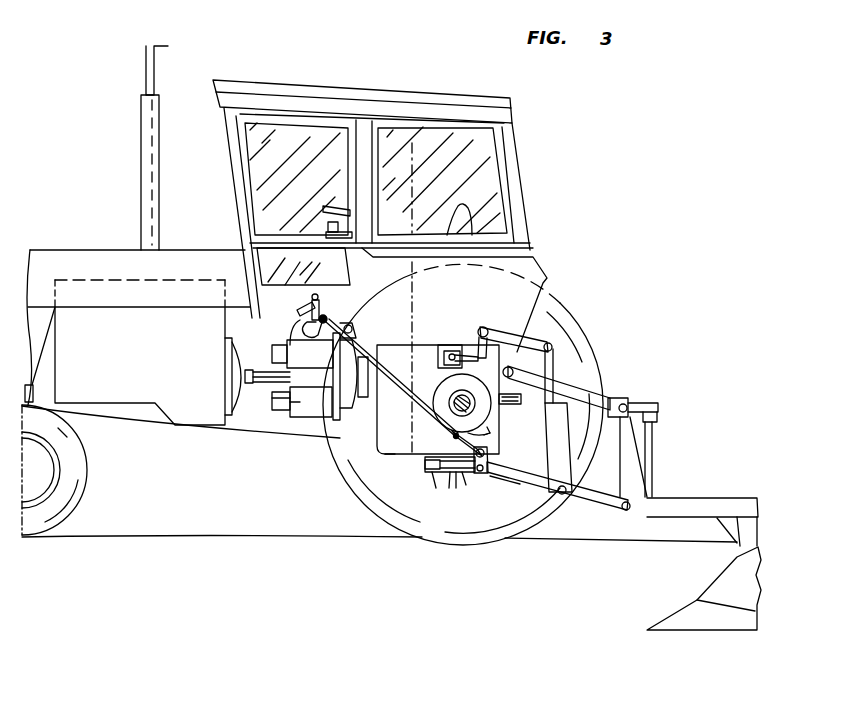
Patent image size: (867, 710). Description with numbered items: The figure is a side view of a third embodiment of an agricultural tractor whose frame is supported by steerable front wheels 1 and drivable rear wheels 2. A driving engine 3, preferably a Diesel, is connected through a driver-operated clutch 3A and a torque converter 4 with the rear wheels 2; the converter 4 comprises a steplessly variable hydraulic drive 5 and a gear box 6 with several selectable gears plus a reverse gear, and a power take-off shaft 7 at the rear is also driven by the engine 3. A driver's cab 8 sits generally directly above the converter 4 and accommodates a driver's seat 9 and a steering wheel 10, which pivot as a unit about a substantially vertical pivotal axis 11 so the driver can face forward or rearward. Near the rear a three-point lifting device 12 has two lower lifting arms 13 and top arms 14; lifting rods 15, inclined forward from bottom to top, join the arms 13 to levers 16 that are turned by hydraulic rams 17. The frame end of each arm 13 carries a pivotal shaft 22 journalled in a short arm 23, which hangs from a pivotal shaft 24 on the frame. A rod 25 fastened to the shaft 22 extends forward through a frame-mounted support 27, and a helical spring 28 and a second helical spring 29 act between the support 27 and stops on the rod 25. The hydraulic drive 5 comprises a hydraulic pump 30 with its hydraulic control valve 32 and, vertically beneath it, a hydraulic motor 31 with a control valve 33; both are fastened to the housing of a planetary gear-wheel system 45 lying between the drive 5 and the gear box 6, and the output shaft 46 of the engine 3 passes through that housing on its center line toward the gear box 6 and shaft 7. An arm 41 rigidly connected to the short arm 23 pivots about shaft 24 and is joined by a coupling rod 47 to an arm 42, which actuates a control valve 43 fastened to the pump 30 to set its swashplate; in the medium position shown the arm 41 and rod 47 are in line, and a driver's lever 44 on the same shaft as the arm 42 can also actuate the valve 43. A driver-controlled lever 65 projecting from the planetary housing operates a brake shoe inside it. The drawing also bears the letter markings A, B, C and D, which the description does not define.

The front wheels 1 is at (78, 492).
The rear wheels 2 is at (422, 545).
The driving engine 3 is at (135, 405).
The driver-operated clutch 3A is at (228, 403).
The torque converter 4 is at (305, 416).
The steplessly variable hydraulic drive 5 is at (272, 413).
The gear box 6 is at (392, 456).
The power take-off shaft 7 is at (513, 399).
The driver's cab 8 is at (512, 150).
The driver's seat 9 is at (470, 216).
The steering wheel 10 is at (331, 204).
The vertical pivotal axis 11 is at (420, 186).
The three-point lifting device 12 is at (578, 388).
The lower lifting arms 13 is at (594, 505).
The top arms 14 is at (603, 372).
The lifting rods 15 is at (560, 443).
The levers 16 is at (500, 328).
The hydraulic rams 17 is at (458, 345).
The pivotal shaft 22 is at (488, 480).
The short arm 23 is at (506, 485).
The pivotal shaft 24 is at (489, 454).
The rod 25 is at (432, 476).
The support 27 is at (452, 490).
The helical spring 28 is at (466, 486).
The helical spring 29 is at (436, 490).
The hydraulic pump 30 is at (288, 344).
The hydraulic motor 31 is at (300, 417).
The hydraulic control valve 32 is at (272, 353).
The control valve 33 is at (274, 410).
The arm 41 is at (503, 426).
The arm 42 is at (352, 316).
The control valve 43 is at (300, 303).
The lever 44 is at (317, 297).
The planetary gear-wheel system 45 is at (342, 428).
The output shaft 46 is at (245, 376).
The coupling rod 47 is at (392, 348).
The driver-controlled lever 65 is at (308, 278).
The pivot point A is at (452, 442).
The direction B is at (431, 391).
The pivot point C is at (337, 309).
The direction D is at (520, 431).